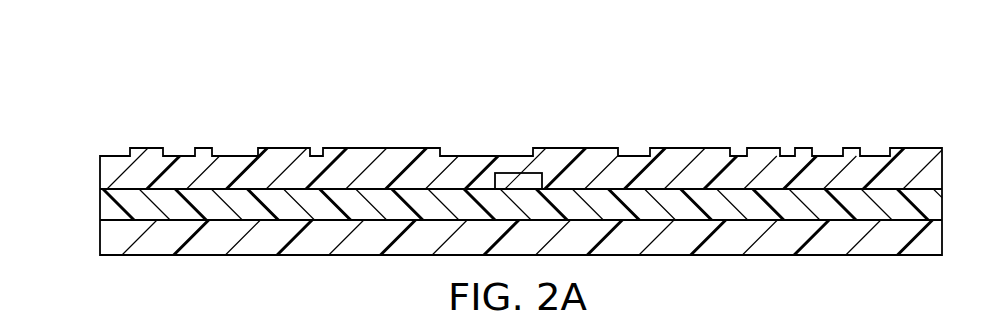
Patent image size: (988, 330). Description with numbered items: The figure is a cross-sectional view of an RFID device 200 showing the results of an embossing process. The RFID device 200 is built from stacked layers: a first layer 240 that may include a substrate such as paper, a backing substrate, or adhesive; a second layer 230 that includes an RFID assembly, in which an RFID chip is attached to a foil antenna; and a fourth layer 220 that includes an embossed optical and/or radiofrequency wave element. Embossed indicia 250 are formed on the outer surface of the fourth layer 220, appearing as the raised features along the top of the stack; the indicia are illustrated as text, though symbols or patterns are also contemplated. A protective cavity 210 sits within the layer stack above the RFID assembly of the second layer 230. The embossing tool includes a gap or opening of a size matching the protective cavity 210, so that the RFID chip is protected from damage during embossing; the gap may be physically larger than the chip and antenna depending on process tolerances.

The RFID device 200 is at (299, 82).
The protective cavity 210 is at (517, 180).
The fourth layer 220 is at (100, 163).
The second layer 230 is at (100, 201).
The first layer 240 is at (100, 237).
The embossed indicia 250 is at (402, 147).